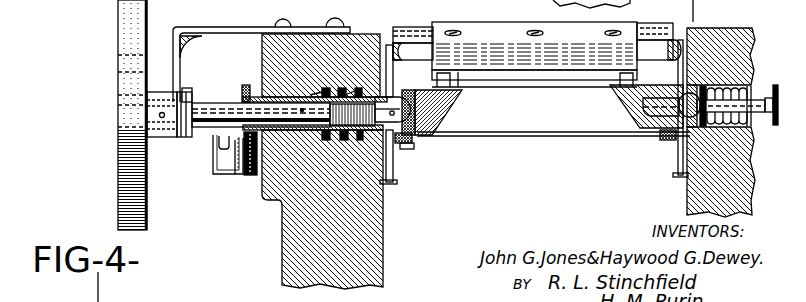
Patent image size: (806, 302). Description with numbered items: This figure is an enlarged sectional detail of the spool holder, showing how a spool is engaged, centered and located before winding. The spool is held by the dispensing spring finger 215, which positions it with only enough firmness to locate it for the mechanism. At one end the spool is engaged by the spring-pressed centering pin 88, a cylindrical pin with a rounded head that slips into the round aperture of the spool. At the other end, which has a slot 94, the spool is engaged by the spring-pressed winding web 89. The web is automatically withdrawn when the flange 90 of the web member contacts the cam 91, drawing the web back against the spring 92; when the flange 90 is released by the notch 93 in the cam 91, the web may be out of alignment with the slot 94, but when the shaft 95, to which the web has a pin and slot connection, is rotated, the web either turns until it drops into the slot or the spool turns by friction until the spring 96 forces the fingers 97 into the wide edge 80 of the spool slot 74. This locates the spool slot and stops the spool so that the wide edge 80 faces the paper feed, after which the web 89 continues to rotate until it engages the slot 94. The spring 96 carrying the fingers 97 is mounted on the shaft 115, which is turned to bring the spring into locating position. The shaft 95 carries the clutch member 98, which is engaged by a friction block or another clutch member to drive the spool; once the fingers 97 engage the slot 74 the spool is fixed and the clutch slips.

The clutch member 98 is at (137, 42).
The flange 90 is at (246, 85).
The shaft 95 is at (237, 116).
The spring 92 is at (373, 198).
The notch 93 is at (213, 158).
The cam 91 is at (243, 176).
The slot 94 is at (446, 133).
The winding web 89 is at (412, 143).
The dispensing spring finger 215 is at (404, 150).
The spool-locating fingers 97 is at (455, 80).
The wide edge 80 is at (528, 133).
The spring 96 is at (565, 47).
The shaft 115 is at (437, 24).
The slot 74 is at (525, 95).
The centering pin 88 is at (670, 134).